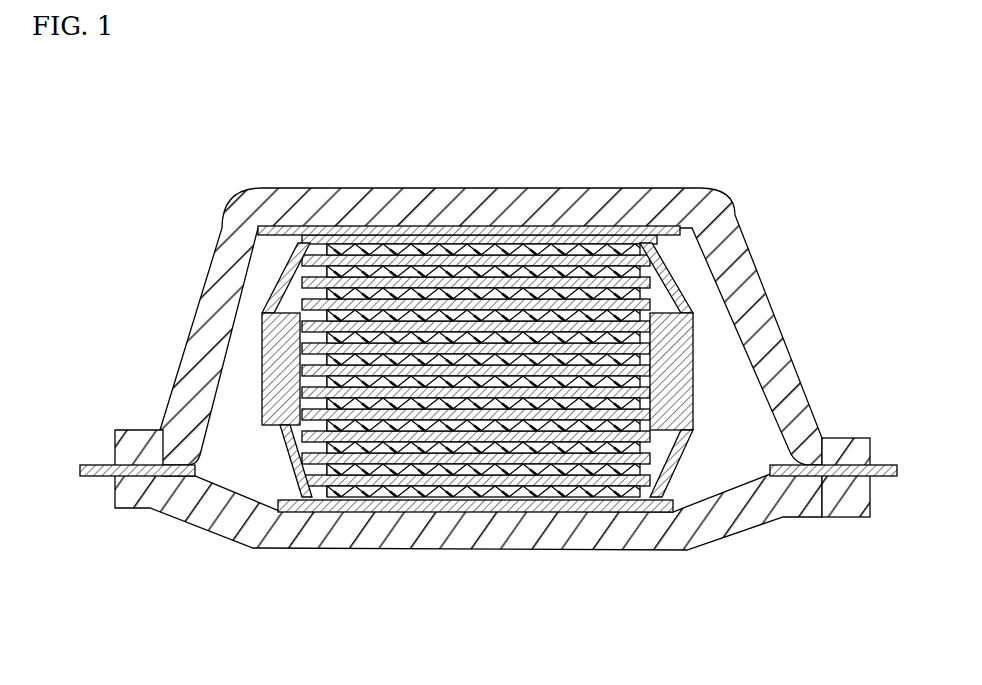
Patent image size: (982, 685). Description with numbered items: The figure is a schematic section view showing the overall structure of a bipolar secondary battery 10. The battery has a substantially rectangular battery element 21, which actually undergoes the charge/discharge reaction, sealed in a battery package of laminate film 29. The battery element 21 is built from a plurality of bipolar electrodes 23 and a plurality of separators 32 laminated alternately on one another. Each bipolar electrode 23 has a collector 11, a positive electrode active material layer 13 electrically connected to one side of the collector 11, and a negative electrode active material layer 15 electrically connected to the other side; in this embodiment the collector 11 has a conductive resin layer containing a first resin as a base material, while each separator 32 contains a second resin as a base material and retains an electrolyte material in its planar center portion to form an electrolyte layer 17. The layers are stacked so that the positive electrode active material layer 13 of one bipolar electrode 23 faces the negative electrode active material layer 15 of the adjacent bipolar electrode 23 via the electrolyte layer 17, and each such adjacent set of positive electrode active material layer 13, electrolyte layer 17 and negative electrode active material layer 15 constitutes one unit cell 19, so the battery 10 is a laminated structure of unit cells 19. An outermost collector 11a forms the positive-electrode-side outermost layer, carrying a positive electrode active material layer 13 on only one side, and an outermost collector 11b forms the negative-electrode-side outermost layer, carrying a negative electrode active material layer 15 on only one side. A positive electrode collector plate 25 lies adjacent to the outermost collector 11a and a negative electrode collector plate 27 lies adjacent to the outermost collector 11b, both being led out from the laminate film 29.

The bipolar secondary battery 10 is at (102, 152).
The collector 11 is at (517, 282).
The outermost collector 11a is at (567, 234).
The outermost collector 11b is at (589, 500).
The positive electrode active material layer 13 is at (465, 295).
The negative electrode active material layer 15 is at (381, 312).
The electrolyte layer 17 is at (425, 303).
The separator 32 is at (479, 199).
The unit cell 19 is at (367, 136).
The battery element 21 is at (700, 413).
The bipolar electrode 23 is at (397, 600).
The positive electrode collector plate 25 is at (103, 463).
The negative electrode collector plate 27 is at (890, 463).
The laminate film 29 is at (863, 436).